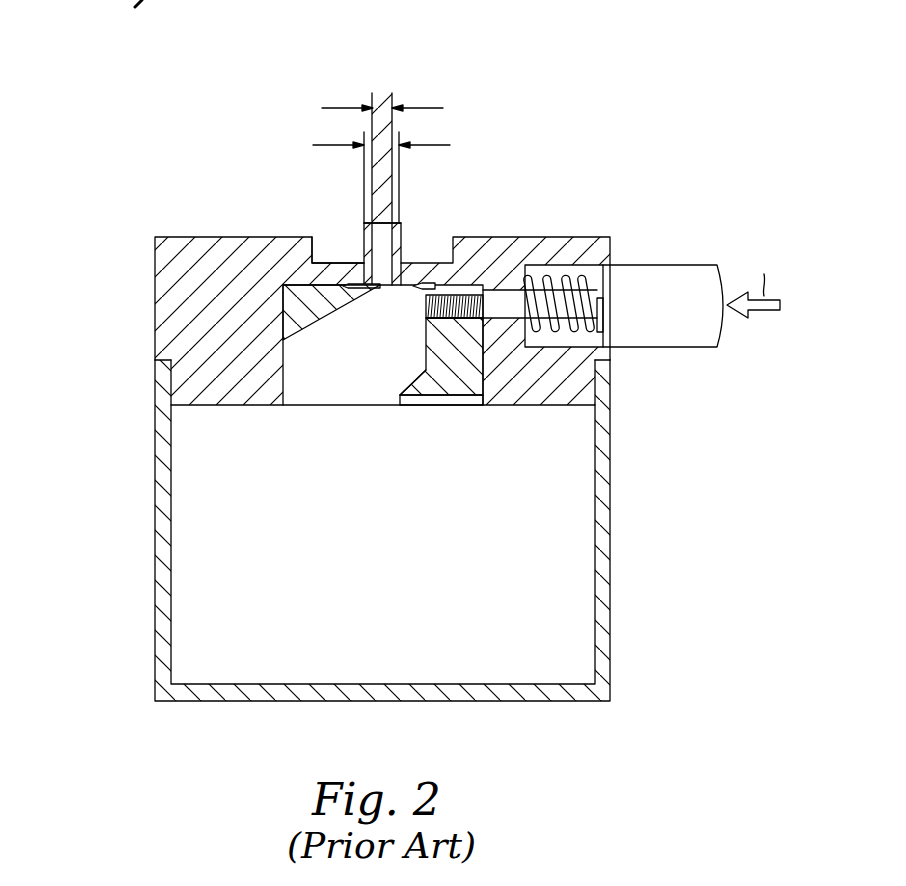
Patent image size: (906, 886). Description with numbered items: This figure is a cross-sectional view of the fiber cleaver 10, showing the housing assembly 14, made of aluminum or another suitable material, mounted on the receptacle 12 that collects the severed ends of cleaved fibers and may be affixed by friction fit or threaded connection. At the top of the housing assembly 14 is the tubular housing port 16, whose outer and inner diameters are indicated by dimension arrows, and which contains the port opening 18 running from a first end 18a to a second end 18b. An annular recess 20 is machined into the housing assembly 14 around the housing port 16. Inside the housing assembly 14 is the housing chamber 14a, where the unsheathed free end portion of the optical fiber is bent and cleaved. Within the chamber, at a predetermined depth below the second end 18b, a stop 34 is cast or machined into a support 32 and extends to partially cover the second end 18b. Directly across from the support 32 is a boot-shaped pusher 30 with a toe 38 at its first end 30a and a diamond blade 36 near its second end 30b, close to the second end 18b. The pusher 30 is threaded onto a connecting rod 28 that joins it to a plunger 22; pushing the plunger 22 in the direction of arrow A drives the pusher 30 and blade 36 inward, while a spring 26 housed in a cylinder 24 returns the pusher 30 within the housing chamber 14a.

The fiber cleaver 10 is at (118, 269).
The receptacle 12 is at (165, 480).
The housing assembly 14 is at (180, 247).
The housing chamber 14a is at (332, 395).
The housing port 16 is at (399, 232).
The port opening 18 is at (403, 258).
The first end of the port opening 18a is at (362, 223).
The second end of the port opening 18b is at (380, 288).
The annular recess 20 is at (320, 243).
The plunger 22 is at (698, 272).
The cylinder 24 is at (585, 267).
The spring 26 is at (585, 310).
The connecting rod 28 is at (485, 305).
The pusher 30 is at (453, 382).
The first end of the pusher 30a is at (423, 397).
The second end of the pusher 30b is at (470, 279).
The support 32 is at (303, 318).
The stop 34 is at (360, 282).
The blade 36 is at (420, 290).
The toe 38 is at (397, 396).